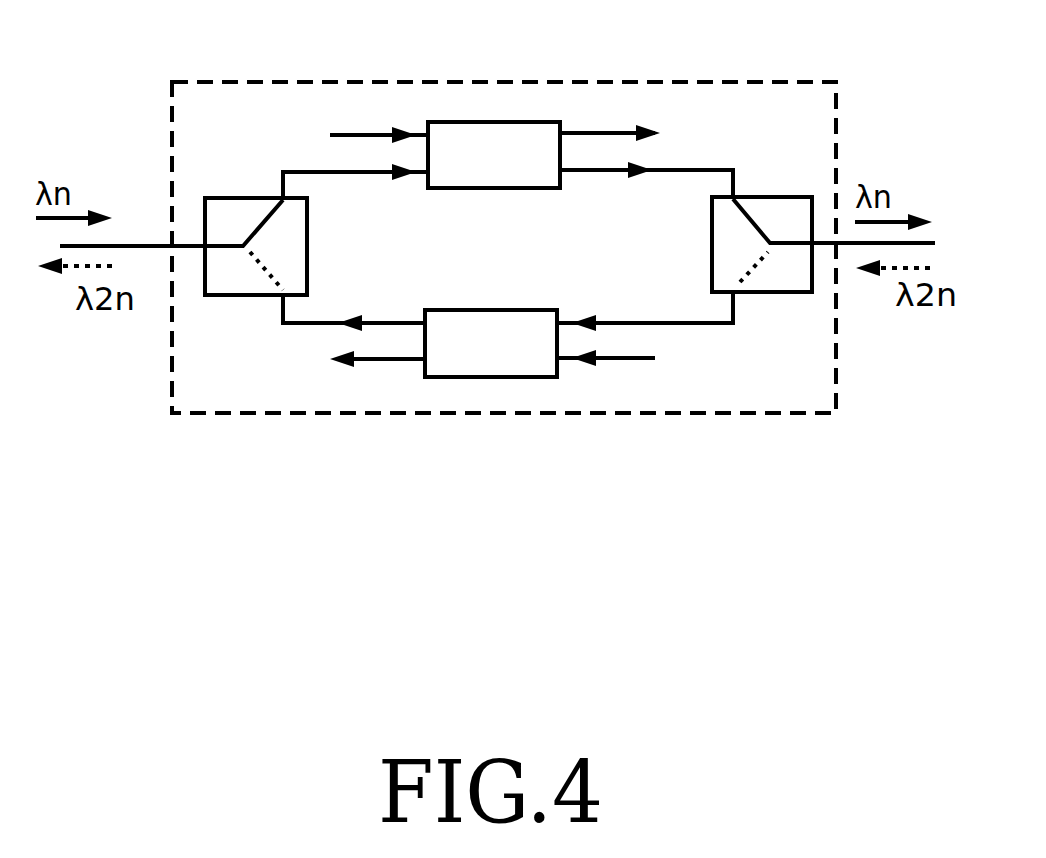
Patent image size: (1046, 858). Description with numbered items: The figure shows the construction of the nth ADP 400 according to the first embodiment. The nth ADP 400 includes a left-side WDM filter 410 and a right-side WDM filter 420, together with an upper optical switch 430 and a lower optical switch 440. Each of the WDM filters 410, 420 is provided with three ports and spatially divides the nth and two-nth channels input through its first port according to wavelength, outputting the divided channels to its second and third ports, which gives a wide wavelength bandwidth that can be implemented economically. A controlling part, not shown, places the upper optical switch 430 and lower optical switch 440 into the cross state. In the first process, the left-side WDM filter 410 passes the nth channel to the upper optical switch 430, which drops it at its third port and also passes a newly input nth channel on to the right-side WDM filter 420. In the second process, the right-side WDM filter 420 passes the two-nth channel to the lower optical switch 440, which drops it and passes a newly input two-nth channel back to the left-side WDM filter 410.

The nth ADP 400 is at (442, 265).
The left-side WDM filter 410 is at (332, 184).
The right-side WDM filter 420 is at (712, 285).
The upper optical switch 430 is at (508, 126).
The lower optical switch 440 is at (499, 376).